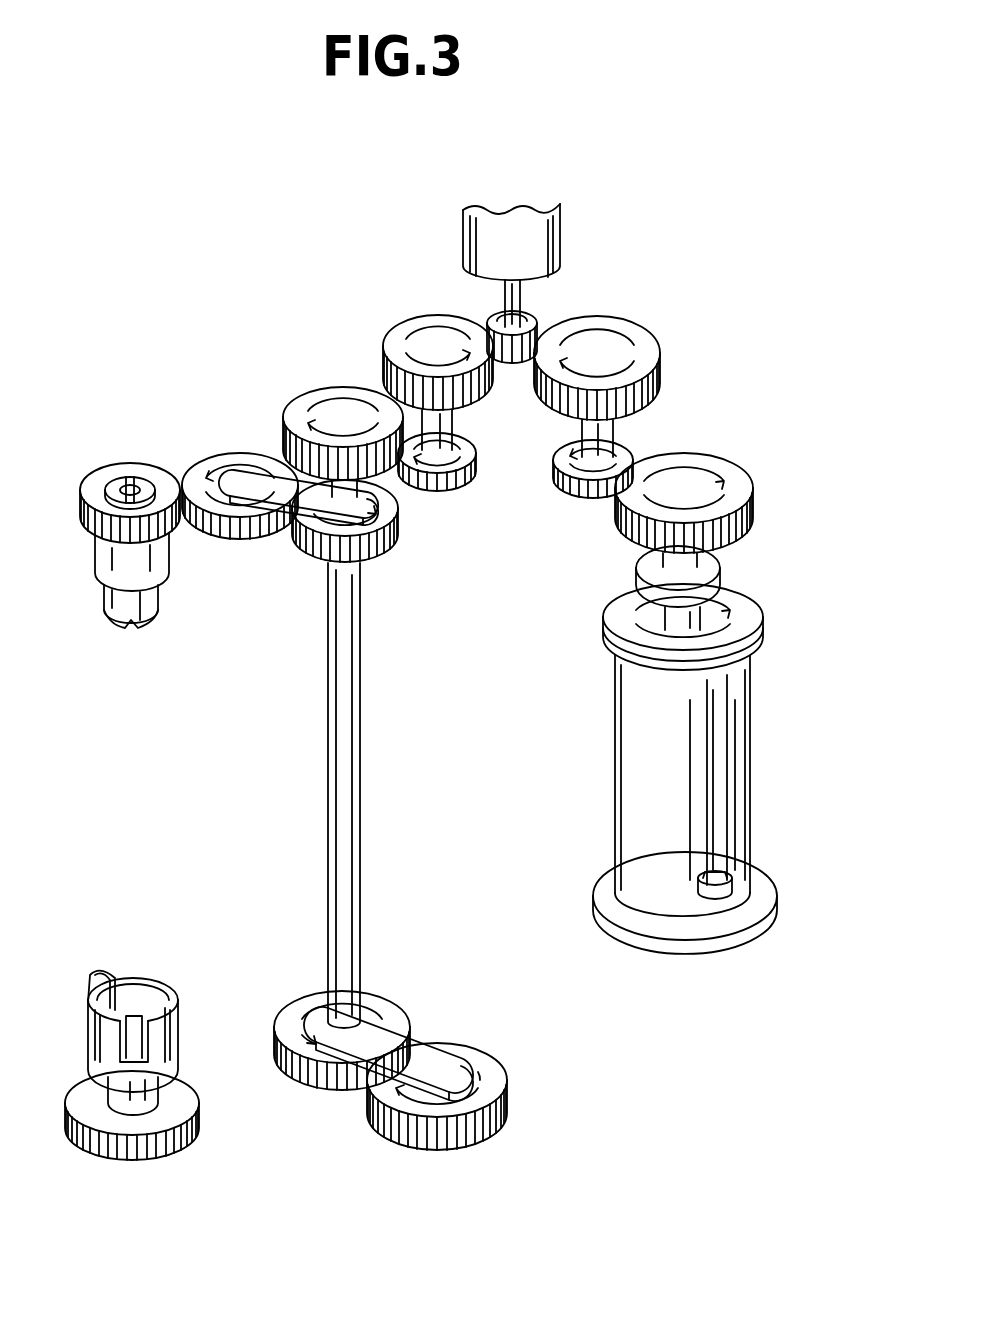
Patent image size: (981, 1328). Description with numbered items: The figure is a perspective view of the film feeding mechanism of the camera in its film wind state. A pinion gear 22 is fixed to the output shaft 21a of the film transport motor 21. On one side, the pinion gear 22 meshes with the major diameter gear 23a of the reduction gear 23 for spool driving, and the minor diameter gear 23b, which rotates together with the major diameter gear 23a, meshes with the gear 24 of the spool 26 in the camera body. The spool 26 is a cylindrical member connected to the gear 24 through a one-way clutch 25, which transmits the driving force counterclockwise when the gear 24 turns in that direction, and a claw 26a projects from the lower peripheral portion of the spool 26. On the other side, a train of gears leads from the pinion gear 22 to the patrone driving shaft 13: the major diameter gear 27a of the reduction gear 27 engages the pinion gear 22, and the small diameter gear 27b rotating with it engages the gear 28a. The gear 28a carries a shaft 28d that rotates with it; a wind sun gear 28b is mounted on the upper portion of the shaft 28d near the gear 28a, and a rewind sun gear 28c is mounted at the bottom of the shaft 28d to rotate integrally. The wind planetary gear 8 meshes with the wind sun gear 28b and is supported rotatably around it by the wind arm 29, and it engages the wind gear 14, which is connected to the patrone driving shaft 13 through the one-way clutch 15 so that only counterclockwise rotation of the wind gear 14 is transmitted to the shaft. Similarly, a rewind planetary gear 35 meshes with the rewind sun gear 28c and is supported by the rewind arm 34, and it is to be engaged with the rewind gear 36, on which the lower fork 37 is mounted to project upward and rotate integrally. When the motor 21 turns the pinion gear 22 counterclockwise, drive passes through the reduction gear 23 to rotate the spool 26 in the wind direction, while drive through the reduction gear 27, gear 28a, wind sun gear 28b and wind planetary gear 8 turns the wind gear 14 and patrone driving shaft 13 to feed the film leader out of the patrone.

The wind planetary gear 8 is at (203, 476).
The patrone driving shaft 13 is at (120, 583).
The wind gear 14 is at (100, 487).
The one-way clutch 15 is at (108, 555).
The film transport motor 21 is at (533, 237).
The output shaft 21a is at (513, 300).
The pinion gear 22 is at (497, 317).
The reduction gear 23 is at (662, 325).
The major diameter gear 23a is at (630, 348).
The minor diameter gear 23b is at (592, 502).
The gear 24 is at (690, 477).
The one-way clutch 25 is at (648, 592).
The spool 26 is at (635, 785).
The claw 26a is at (720, 870).
The reduction gear 27 is at (465, 423).
The major diameter gear 27a is at (403, 324).
The small diameter gear 27b is at (437, 487).
The gear 28a is at (322, 400).
The wind sun gear 28b is at (373, 548).
The rewind sun gear 28c is at (387, 1003).
The shaft 28d is at (345, 790).
The wind arm 29 is at (265, 478).
The rewind arm 34 is at (400, 1047).
The rewind planetary gear 35 is at (460, 1060).
The rewind gear 36 is at (178, 1102).
The lower fork 37 is at (162, 1040).